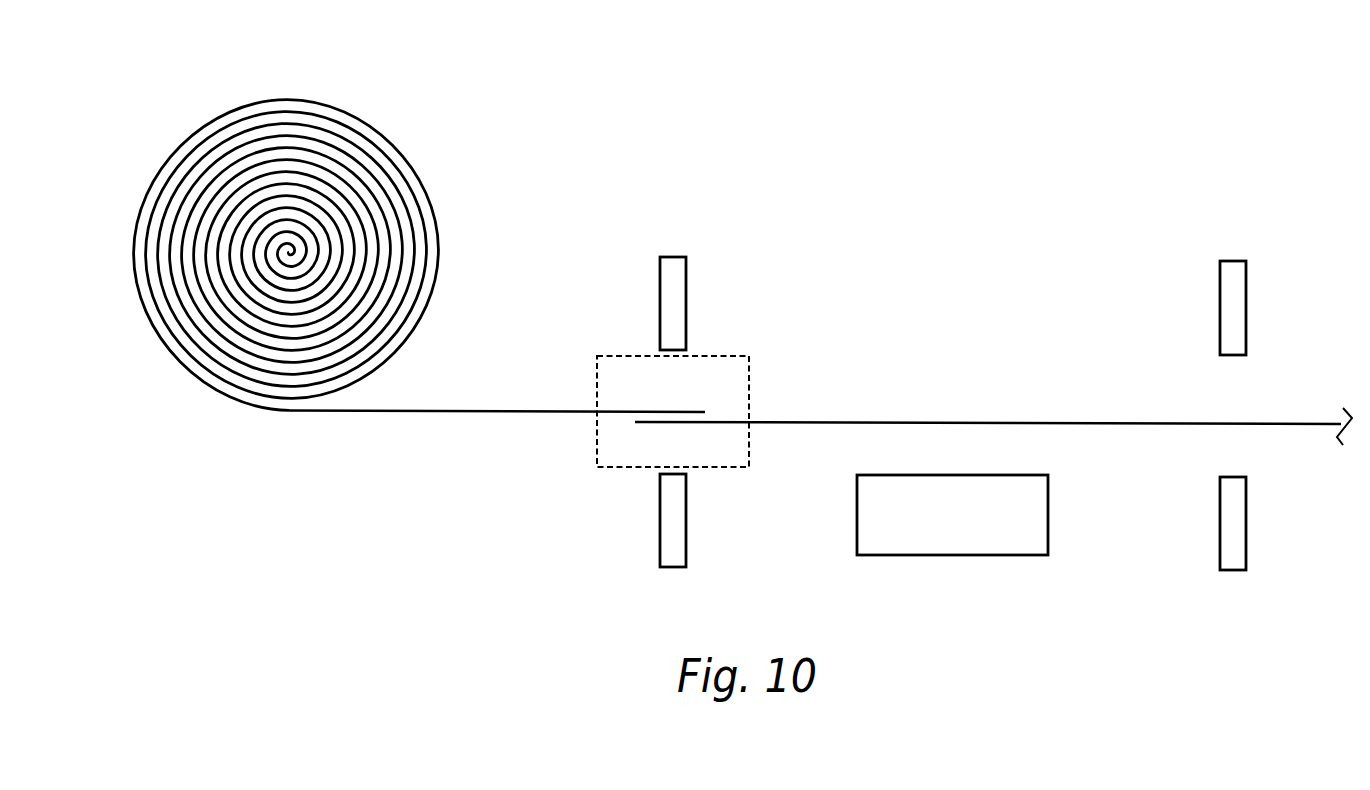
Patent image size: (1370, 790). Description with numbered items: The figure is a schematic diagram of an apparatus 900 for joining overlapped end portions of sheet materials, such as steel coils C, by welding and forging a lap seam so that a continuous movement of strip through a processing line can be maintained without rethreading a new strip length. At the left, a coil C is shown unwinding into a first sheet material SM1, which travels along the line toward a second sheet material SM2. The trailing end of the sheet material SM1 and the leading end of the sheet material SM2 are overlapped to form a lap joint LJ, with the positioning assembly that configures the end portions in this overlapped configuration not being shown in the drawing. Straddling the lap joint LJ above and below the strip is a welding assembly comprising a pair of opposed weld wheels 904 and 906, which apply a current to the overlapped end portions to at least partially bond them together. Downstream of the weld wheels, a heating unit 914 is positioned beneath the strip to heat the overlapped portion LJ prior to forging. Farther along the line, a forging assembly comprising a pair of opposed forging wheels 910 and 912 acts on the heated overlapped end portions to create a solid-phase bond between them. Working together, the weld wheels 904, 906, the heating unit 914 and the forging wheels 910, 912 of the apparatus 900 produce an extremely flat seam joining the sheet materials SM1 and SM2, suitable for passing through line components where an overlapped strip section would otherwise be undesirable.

The steel coil C is at (418, 168).
The apparatus for joining overlapped end portions of sheet materials 900 is at (928, 158).
The weld wheel 904 is at (657, 295).
The weld wheel 906 is at (660, 538).
The forging wheel 910 is at (1220, 296).
The forging wheel 912 is at (1220, 538).
The heating unit 914 is at (943, 540).
The sheet material SM1 is at (510, 411).
The sheet material SM2 is at (1090, 422).
The lap joint LJ is at (748, 391).